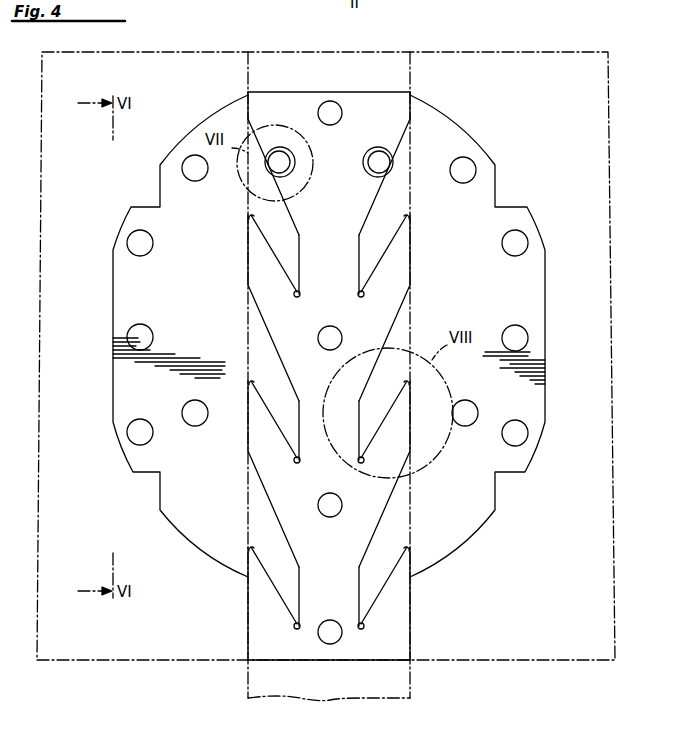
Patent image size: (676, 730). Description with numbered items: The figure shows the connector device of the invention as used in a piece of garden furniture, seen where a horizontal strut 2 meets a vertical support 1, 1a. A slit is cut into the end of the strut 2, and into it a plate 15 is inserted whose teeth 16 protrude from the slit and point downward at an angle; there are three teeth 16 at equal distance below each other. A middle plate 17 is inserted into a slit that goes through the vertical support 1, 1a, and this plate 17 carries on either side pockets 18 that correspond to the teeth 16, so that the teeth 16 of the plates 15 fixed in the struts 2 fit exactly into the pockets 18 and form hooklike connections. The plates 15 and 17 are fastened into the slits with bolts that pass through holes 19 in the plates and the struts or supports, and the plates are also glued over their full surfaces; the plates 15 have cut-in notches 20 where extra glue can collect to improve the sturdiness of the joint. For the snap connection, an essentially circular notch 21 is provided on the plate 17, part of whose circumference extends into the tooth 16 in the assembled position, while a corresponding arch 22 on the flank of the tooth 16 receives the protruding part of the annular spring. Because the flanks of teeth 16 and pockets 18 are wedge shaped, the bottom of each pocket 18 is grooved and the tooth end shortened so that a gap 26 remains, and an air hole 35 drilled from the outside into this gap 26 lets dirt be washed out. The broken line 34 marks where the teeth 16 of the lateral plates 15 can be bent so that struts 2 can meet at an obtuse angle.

The vertical support 1 is at (360, 62).
The vertical support 1a is at (329, 698).
The horizontal strut 2 is at (100, 72).
The plate 15 is at (113, 280).
The tooth 16 is at (362, 250).
The plate 17 is at (286, 92).
The pocket 18 is at (372, 280).
The hole 19 is at (333, 114).
The notch 20 is at (155, 185).
The circular notch 21 is at (366, 153).
The arch 22 is at (297, 180).
The gap 26 is at (412, 540).
The broken line 34 is at (245, 322).
The air hole 35 is at (356, 298).